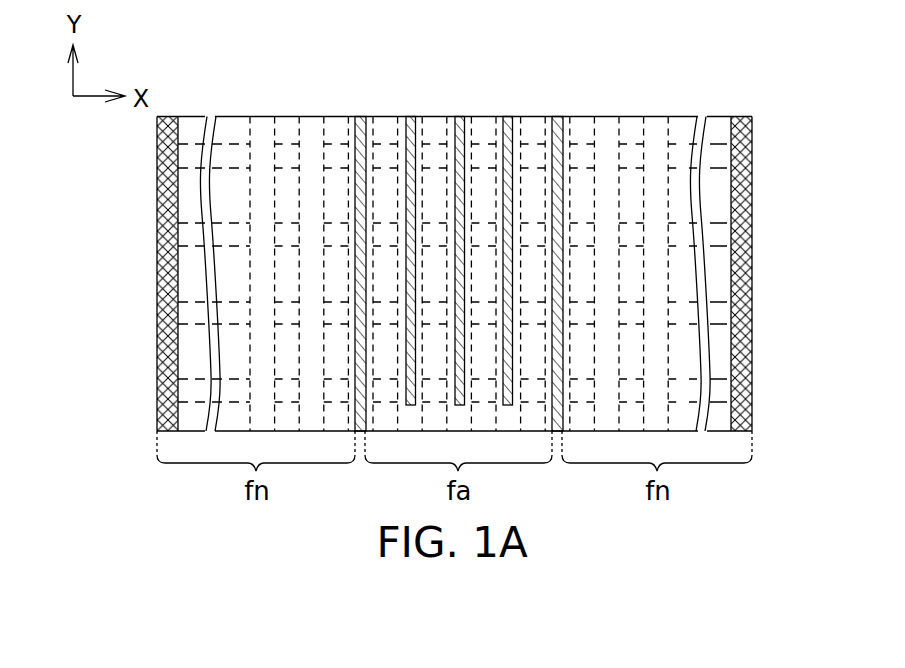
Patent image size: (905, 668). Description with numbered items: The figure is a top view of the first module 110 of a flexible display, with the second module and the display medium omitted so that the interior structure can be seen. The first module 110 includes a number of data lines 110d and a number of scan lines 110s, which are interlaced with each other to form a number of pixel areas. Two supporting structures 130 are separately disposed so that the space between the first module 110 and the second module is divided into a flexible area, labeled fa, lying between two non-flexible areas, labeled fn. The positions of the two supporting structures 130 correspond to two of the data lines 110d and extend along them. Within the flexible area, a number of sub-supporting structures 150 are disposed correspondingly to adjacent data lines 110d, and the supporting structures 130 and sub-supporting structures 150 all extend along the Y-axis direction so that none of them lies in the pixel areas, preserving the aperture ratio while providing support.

The first module 110 is at (232, 115).
The data lines 110d is at (376, 127).
The scan lines 110s is at (688, 133).
The supporting structures 130 is at (361, 115).
The sub-supporting structures 150 is at (507, 115).